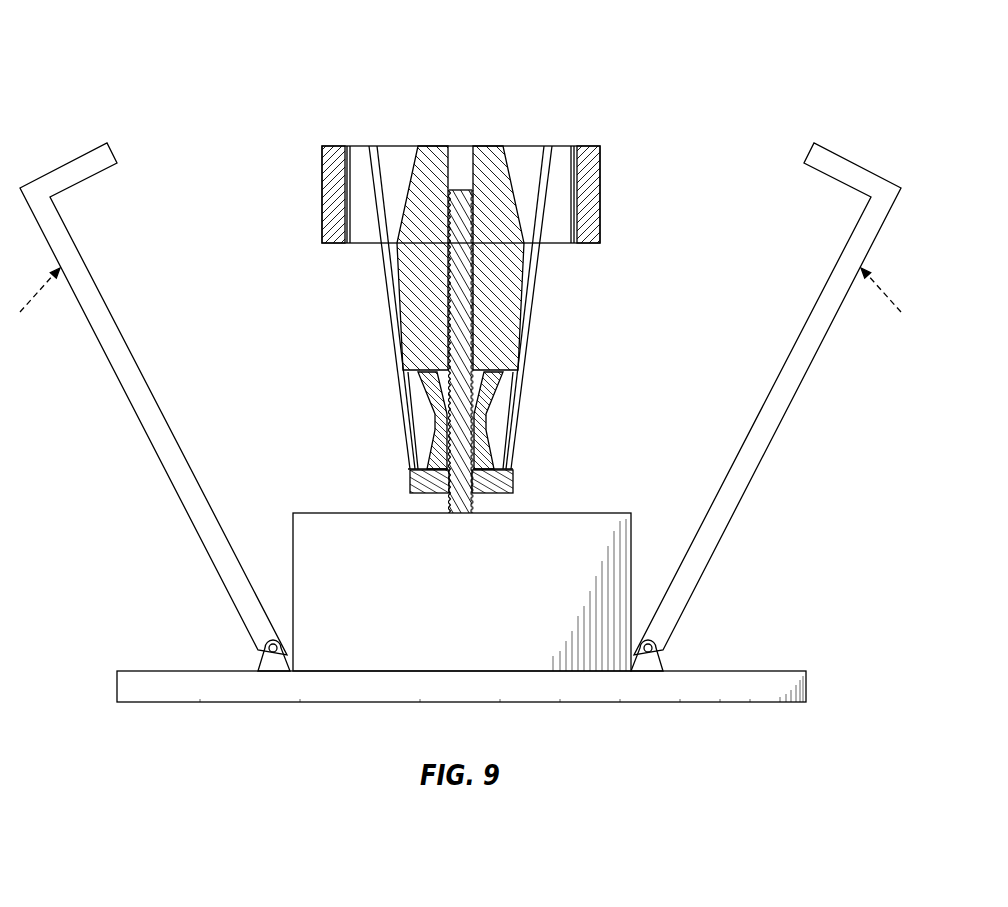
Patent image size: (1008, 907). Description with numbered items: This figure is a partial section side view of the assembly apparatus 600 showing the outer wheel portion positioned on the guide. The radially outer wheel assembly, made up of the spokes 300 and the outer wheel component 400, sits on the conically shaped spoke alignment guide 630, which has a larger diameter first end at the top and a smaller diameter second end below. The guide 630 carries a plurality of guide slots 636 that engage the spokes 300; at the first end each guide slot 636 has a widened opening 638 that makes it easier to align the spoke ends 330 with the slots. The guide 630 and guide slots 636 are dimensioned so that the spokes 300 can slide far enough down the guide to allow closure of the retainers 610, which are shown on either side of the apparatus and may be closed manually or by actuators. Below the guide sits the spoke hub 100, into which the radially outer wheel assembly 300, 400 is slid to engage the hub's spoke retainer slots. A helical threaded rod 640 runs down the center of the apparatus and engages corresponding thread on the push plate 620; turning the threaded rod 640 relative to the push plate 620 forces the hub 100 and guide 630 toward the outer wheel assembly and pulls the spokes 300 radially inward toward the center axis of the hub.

The assembly apparatus 600 is at (814, 56).
The retainers 610 is at (130, 403).
The outer wheel component 400 is at (604, 193).
The spokes 300 is at (362, 167).
The spoke ends 330 is at (378, 155).
The widened opening 638 is at (527, 158).
The guide slots 636 is at (528, 280).
The spoke alignment guide 630 is at (493, 322).
The spoke hub 100 is at (503, 400).
The push plate 620 is at (513, 483).
The helical threaded rod 640 is at (476, 497).